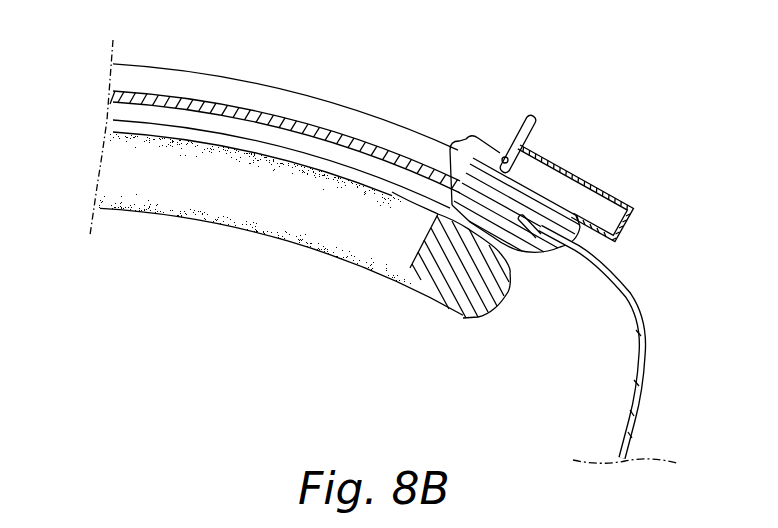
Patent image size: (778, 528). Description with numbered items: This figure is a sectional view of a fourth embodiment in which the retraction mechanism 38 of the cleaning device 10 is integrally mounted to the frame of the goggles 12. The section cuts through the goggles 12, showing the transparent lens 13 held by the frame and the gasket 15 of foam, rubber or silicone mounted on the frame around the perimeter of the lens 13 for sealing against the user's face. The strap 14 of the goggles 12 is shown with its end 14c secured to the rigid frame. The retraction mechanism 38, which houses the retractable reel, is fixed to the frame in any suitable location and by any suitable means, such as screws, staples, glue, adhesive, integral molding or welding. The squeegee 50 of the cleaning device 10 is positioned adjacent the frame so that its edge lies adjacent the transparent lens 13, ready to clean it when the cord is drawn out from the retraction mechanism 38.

The cleaning device 10 is at (638, 97).
The goggles 12 is at (177, 135).
The transparent lens 13 is at (110, 97).
The strap 14 is at (640, 310).
The end of the strap 14c is at (534, 248).
The gasket 15 is at (437, 302).
The retraction mechanism 38 is at (583, 193).
The squeegee 50 is at (485, 150).